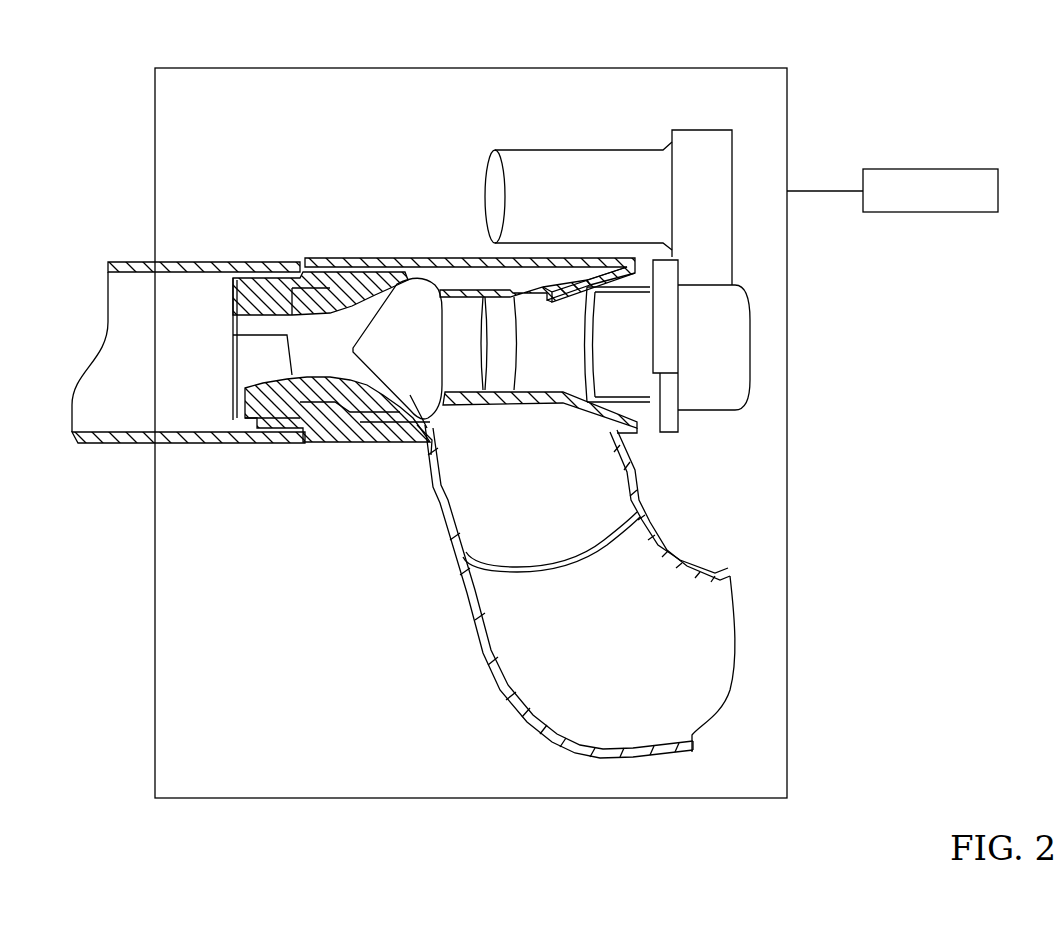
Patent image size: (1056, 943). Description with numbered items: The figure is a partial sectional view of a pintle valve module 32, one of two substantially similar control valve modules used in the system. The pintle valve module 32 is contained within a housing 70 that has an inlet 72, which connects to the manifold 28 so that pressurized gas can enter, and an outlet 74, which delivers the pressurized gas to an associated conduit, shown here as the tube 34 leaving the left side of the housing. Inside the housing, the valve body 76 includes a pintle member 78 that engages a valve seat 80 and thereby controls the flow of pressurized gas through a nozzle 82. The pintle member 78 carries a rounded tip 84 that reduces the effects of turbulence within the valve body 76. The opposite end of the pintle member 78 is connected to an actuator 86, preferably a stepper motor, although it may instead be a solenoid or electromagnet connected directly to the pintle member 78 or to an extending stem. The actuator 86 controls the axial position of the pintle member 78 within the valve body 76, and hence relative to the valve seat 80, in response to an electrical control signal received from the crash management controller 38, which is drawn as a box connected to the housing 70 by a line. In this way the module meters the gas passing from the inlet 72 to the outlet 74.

The manifold 28 is at (667, 747).
The pintle valve module 32 is at (372, 51).
The fuel supply tube 34 is at (138, 433).
The crash management controller 38 is at (957, 168).
The housing 70 is at (308, 798).
The inlet 72 is at (600, 492).
The outlet 74 is at (217, 330).
The valve body 76 is at (466, 257).
The pintle member 78 is at (418, 445).
The valve seat 80 is at (381, 288).
The nozzle 82 is at (273, 422).
The rounded tip 84 is at (375, 345).
The actuator 86 is at (590, 172).